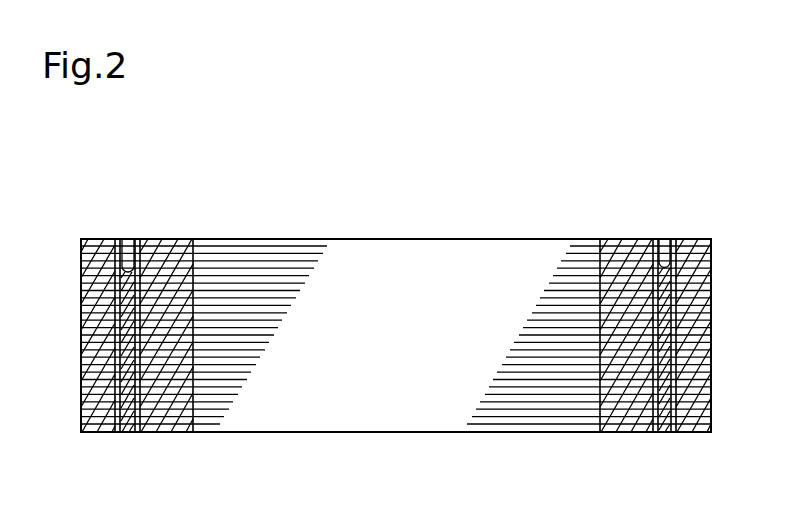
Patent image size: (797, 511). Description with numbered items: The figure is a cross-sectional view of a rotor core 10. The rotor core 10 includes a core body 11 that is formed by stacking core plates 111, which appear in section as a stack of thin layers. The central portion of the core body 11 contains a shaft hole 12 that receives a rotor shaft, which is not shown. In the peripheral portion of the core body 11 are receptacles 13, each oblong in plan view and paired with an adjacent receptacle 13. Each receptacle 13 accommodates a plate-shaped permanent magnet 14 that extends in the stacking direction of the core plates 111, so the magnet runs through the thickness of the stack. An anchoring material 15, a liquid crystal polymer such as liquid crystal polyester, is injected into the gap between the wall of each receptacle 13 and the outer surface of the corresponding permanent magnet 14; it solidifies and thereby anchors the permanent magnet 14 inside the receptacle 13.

The rotor core 10 is at (445, 219).
The core body 11 is at (382, 239).
The shaft hole 12 is at (598, 249).
The receptacle 13 is at (127, 242).
The permanent magnet 14 is at (128, 423).
The anchoring material 15 is at (113, 413).
The core plates 111 is at (705, 315).